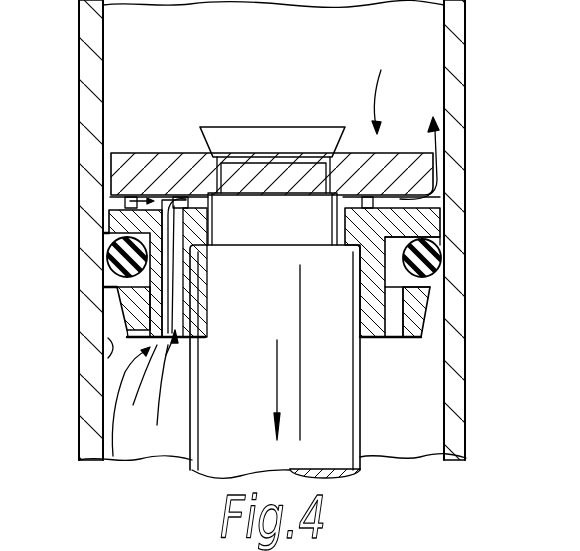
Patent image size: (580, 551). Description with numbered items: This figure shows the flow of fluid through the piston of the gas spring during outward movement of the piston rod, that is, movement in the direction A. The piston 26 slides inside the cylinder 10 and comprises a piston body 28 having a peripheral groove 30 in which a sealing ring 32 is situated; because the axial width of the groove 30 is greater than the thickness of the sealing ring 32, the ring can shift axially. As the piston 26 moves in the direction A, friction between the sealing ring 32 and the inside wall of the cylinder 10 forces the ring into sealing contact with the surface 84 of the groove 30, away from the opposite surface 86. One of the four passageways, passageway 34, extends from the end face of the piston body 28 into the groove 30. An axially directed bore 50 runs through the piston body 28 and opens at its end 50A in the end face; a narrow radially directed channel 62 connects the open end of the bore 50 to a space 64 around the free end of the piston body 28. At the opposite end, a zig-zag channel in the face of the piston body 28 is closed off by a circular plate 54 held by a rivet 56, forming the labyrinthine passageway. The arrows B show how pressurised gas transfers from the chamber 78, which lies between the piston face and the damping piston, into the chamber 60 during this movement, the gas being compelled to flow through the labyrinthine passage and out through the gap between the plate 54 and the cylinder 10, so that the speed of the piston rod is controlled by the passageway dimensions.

The cylinder 10 is at (452, 25).
The piston 26 is at (382, 90).
The piston body 28 is at (432, 218).
The peripheral groove 30 is at (105, 270).
The sealing ring 32 is at (437, 258).
The passageway 34 is at (397, 325).
The axially directed bore 50 is at (165, 222).
The open end of bore 50A is at (186, 358).
The circular plate 54 is at (423, 163).
The rivet 56 is at (254, 134).
The chamber 60 is at (118, 17).
The radially directed channel 62 is at (133, 328).
The space 64 is at (108, 303).
The chamber 78 is at (100, 358).
The surface of groove 84 is at (443, 247).
The surface of groove 86 is at (422, 286).
The direction of outward movement A is at (274, 426).
The arrows showing gas flow B is at (118, 400).